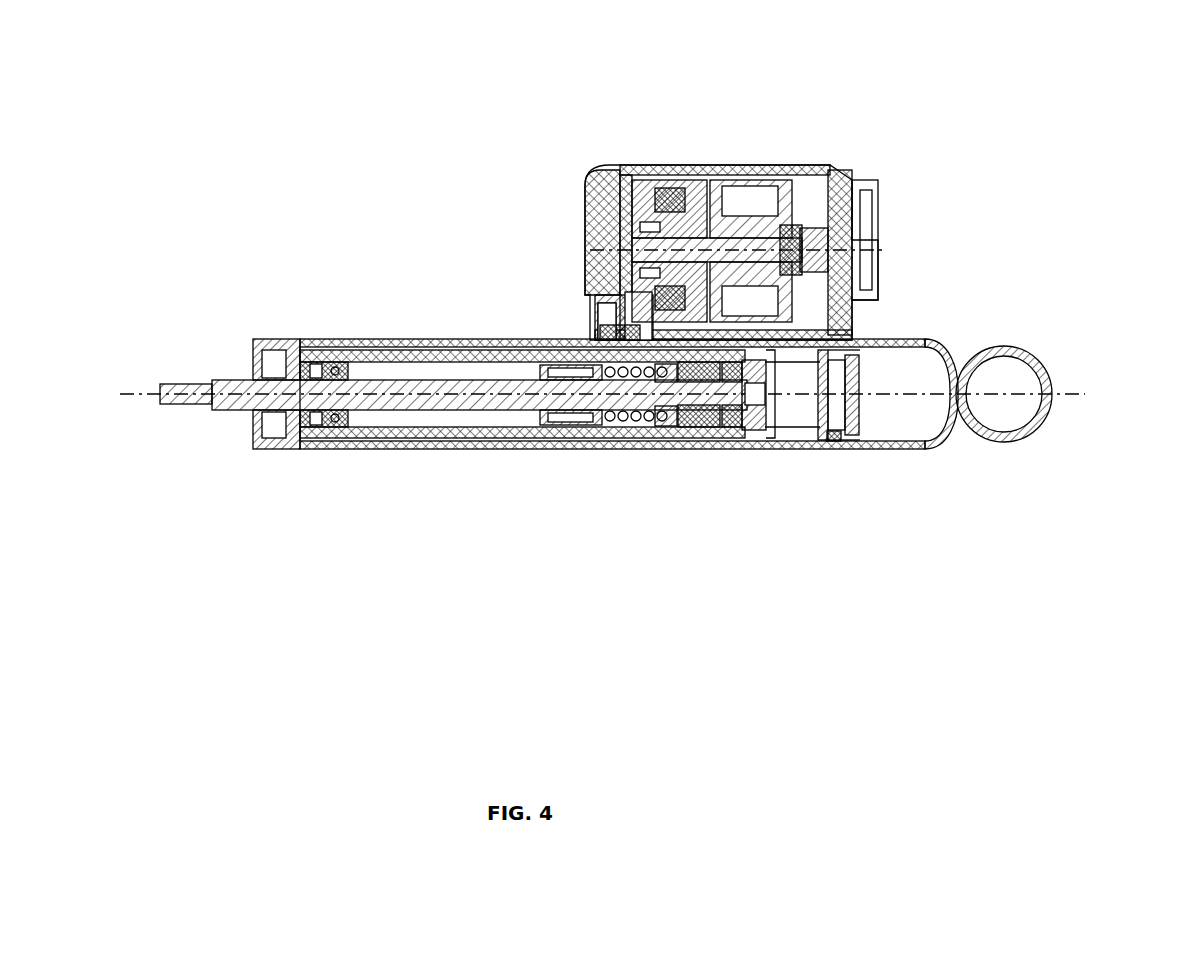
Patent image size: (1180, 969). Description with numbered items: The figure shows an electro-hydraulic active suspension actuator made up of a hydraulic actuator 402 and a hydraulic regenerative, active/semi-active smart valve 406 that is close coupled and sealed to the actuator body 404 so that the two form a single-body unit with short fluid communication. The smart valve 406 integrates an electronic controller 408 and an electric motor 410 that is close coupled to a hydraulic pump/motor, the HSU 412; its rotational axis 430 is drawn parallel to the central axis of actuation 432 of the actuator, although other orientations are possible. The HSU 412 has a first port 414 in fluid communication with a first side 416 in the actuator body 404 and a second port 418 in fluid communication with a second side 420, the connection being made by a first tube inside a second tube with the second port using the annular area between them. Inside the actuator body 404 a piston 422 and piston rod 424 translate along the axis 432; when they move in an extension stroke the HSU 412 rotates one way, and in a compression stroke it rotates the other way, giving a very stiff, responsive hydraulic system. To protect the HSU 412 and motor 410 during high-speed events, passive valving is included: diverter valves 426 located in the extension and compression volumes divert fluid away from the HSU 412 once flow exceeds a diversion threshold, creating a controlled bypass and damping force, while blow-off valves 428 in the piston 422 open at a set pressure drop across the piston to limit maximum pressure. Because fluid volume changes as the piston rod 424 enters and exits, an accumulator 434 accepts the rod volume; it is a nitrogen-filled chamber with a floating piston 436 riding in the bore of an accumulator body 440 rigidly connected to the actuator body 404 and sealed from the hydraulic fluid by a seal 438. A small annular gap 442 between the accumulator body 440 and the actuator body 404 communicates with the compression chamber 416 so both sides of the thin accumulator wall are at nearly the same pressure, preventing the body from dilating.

The hydraulic actuator 402 is at (245, 341).
The actuator body 404 is at (567, 472).
The smart valve 406 is at (905, 216).
The electronic controller 408 is at (840, 210).
The electric motor 410 is at (758, 212).
The hydraulic pump/motor (HSU) 412 is at (670, 230).
The first port 414 is at (632, 317).
The first side 416 is at (747, 387).
The second port 418 is at (620, 337).
The second side 420 is at (375, 418).
The piston 422 is at (668, 410).
The piston rod 424 is at (243, 402).
The diverter valve 426 is at (330, 370).
The blow-off valve 428 is at (632, 428).
The smart valve axis 430 is at (603, 250).
The central axis of actuation 432 is at (986, 393).
The accumulator 434 is at (916, 472).
The floating piston 436 is at (848, 417).
The seal 438 is at (833, 437).
The accumulator body 440 is at (1017, 435).
The annular gap 442 is at (910, 344).